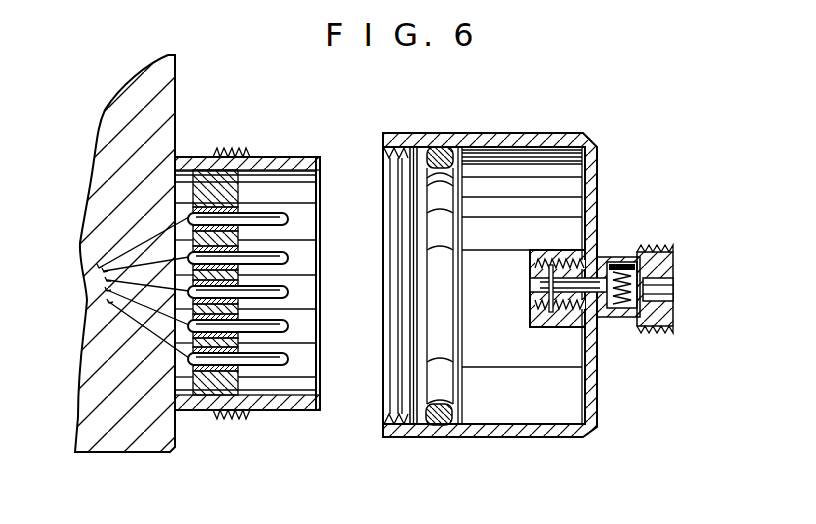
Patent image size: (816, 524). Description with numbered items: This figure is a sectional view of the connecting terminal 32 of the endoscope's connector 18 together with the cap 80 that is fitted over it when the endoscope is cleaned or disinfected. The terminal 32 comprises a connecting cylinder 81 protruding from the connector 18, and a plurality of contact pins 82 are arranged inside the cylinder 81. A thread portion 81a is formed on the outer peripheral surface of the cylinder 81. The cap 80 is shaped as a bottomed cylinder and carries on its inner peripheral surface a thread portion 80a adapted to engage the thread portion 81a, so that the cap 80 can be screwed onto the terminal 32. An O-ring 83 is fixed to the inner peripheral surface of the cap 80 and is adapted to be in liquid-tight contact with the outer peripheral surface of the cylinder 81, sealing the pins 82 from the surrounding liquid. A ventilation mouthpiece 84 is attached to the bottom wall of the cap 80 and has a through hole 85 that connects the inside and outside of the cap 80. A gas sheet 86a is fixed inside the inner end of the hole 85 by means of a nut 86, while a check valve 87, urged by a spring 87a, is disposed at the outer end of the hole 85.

The connector 18 is at (176, 88).
The connecting terminal 32 is at (275, 120).
The connecting cylinder 81 is at (294, 165).
The thread portion 81a is at (224, 147).
The contact pins 82 is at (290, 258).
The cap 80 is at (458, 268).
The thread portion 80a is at (386, 158).
The O-ring 83 is at (440, 148).
The ventilation mouthpiece 84 is at (589, 306).
The through hole 85 is at (572, 292).
The nut 86 is at (532, 264).
The gas sheet 86a is at (531, 289).
The check valve 87 is at (636, 300).
The spring 87a is at (612, 262).